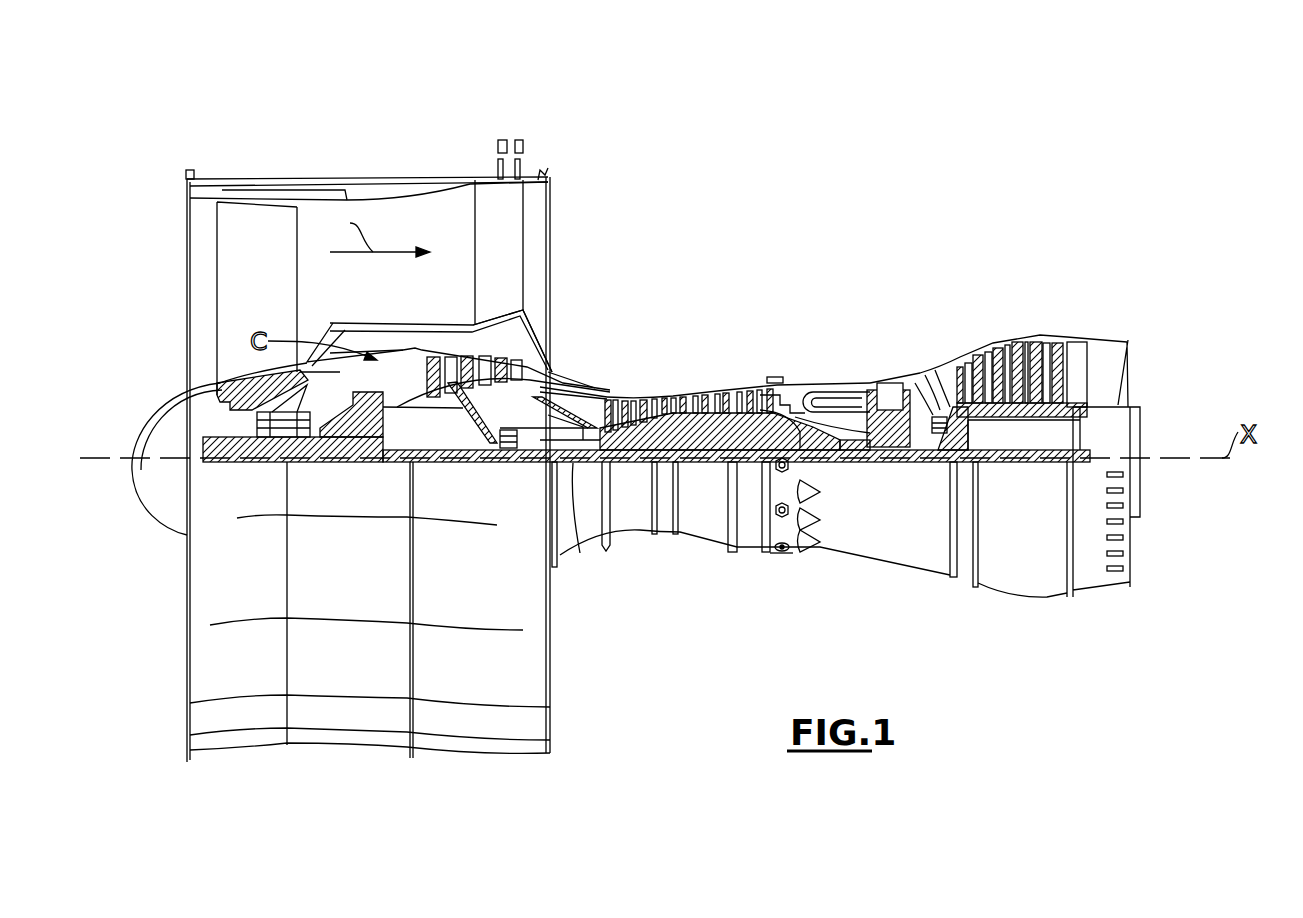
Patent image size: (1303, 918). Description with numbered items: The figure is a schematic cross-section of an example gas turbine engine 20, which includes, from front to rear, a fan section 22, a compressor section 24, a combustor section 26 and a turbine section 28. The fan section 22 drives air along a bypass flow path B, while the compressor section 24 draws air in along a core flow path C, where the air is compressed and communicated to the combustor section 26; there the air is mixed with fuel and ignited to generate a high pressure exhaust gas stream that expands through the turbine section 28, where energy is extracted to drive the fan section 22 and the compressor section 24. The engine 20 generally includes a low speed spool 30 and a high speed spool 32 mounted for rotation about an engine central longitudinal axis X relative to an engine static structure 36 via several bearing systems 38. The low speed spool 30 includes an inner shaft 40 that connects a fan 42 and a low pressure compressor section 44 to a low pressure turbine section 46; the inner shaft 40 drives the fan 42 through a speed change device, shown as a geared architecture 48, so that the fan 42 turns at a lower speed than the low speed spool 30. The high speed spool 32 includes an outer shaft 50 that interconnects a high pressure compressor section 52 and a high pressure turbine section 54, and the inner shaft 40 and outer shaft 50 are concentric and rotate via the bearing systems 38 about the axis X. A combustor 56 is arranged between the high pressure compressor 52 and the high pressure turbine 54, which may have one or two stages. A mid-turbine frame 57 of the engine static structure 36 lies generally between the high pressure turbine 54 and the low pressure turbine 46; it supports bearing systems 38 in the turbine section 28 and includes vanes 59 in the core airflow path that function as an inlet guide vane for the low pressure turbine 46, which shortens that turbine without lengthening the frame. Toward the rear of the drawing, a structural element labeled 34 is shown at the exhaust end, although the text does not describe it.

The gas turbine engine 20 is at (834, 222).
The fan section 22 is at (395, 152).
The compressor section 24 is at (750, 298).
The combustor section 26 is at (860, 300).
The turbine section 28 is at (1083, 300).
The low speed spool 30 is at (704, 476).
The high speed spool 32 is at (753, 413).
The turbine exhaust case 34 is at (1033, 425).
The engine static structure 36 is at (748, 562).
The bearing systems 38 is at (263, 452).
The inner shaft 40 is at (573, 463).
The fan 42 is at (270, 306).
The low pressure compressor section 44 is at (535, 318).
The low pressure turbine section 46 is at (1017, 358).
The geared architecture 48 is at (373, 447).
The outer shaft 50 is at (828, 455).
The high pressure compressor section 52 is at (678, 428).
The high pressure turbine section 54 is at (889, 378).
The combustor 56 is at (823, 402).
The mid-turbine frame 57 is at (935, 360).
The vanes 59 is at (965, 436).